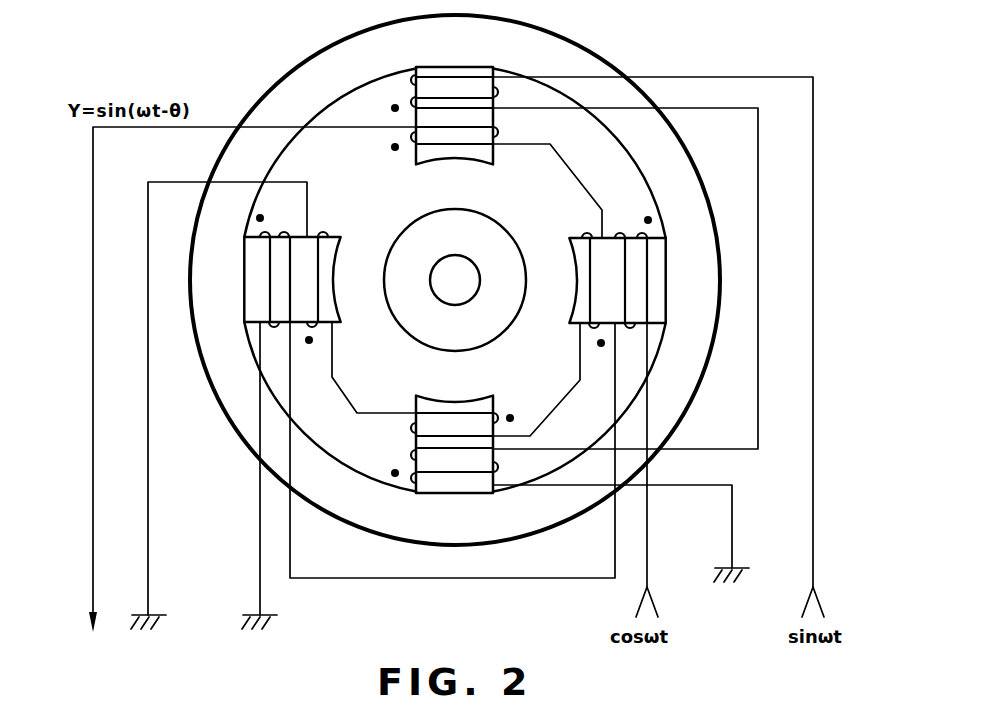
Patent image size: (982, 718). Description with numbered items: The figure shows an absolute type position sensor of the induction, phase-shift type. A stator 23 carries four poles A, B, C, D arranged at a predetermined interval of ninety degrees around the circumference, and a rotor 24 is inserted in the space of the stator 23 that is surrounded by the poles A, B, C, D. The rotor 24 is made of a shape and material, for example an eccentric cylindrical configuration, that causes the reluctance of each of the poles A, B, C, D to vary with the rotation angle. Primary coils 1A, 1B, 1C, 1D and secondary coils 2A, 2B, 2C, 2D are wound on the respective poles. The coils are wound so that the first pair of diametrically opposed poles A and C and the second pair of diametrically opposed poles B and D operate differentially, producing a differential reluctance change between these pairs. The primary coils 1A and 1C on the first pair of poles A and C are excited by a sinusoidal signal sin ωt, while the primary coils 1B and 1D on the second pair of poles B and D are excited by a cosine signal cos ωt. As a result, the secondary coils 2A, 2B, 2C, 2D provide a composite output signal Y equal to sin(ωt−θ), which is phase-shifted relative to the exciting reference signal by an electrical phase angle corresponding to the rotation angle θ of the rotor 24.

The stator 23 is at (573, 42).
The rotor 24 is at (500, 334).
The pole A is at (462, 160).
The pole B is at (568, 262).
The pole C is at (431, 397).
The pole D is at (337, 277).
The primary coil 1A is at (404, 81).
The secondary coil 2A is at (500, 132).
The primary coil 1B is at (620, 232).
The secondary coil 2B is at (600, 350).
The primary coil 1C is at (405, 455).
The secondary coil 2C is at (500, 418).
The primary coil 1D is at (285, 232).
The secondary coil 2D is at (312, 335).